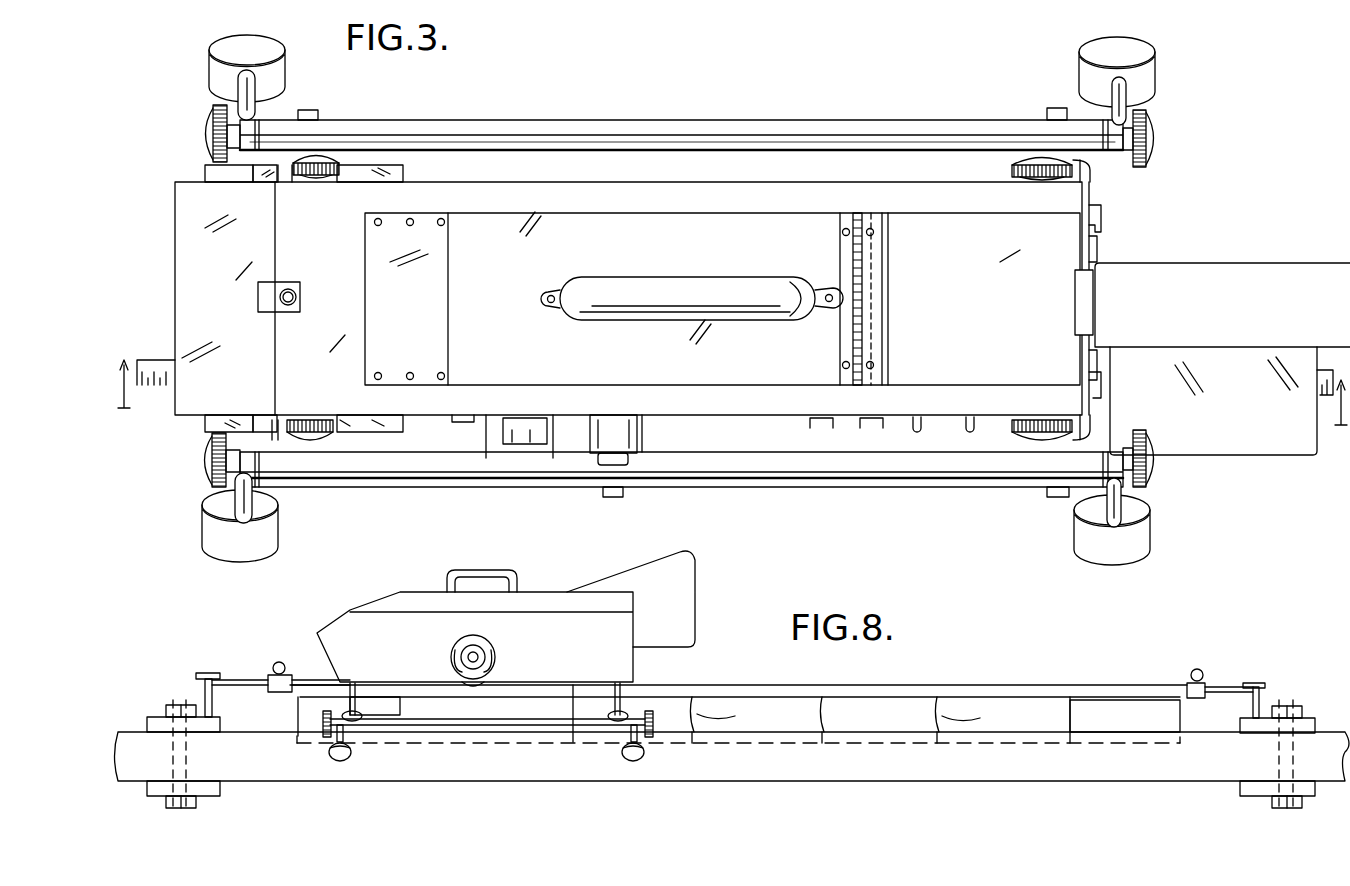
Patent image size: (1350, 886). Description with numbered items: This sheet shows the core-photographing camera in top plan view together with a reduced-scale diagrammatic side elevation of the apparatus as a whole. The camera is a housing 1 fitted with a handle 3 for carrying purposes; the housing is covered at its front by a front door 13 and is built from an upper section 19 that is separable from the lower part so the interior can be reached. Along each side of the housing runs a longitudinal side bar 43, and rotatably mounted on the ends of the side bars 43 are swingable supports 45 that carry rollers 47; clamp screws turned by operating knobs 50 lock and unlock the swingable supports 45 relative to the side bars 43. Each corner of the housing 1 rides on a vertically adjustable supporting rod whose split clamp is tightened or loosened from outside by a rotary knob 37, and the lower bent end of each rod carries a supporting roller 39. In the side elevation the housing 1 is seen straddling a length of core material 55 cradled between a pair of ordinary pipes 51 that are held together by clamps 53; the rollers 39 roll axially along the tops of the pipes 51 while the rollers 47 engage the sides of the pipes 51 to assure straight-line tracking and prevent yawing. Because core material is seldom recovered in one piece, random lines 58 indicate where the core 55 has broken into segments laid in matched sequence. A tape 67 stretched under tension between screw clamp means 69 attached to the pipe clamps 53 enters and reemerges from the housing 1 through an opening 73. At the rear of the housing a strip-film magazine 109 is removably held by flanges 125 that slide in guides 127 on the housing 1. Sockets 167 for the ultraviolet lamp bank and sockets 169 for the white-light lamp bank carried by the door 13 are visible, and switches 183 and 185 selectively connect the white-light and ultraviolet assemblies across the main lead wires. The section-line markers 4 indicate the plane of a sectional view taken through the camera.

In FIG. 8, the housing 1 is at (556, 666).
In FIG. 3, the handle 3 is at (638, 318).
In FIG. 3, the section line 4 is at (731, 403).
In FIG. 3, the front door 13 is at (236, 283).
In FIG. 3, the upper section 19 is at (331, 364).
In FIG. 3, the rotary knob 37 is at (320, 165).
In FIG. 8, the supporting roller 39 is at (340, 716).
In FIG. 3, the longitudinal side bar 43 is at (655, 134).
In FIG. 8, the longitudinal side bar 43 is at (495, 726).
In FIG. 3, the swingable support 45 is at (244, 88).
In FIG. 3, the roller 47 is at (275, 83).
In FIG. 8, the roller 47 is at (330, 756).
In FIG. 3, the operating knob 50 is at (208, 136).
In FIG. 8, the pipe 51 is at (738, 772).
In FIG. 8, the clamp 53 is at (162, 716).
In FIG. 8, the core material 55 is at (934, 686).
In FIG. 8, the random lines 58 is at (775, 712).
In FIG. 8, the tape 67 is at (718, 688).
In FIG. 8, the screw clamp means 69 is at (284, 668).
In FIG. 8, the opening 73 is at (475, 683).
In FIG. 3, the strip-film magazine 109 is at (1232, 317).
In FIG. 8, the strip-film magazine 109 is at (687, 611).
In FIG. 3, the flange 125 is at (1097, 248).
In FIG. 3, the guide 127 is at (1097, 212).
In FIG. 3, the socket 167 is at (400, 175).
In FIG. 3, the socket 169 is at (210, 170).
In FIG. 3, the switch 183 is at (816, 426).
In FIG. 3, the switch 185 is at (886, 438).